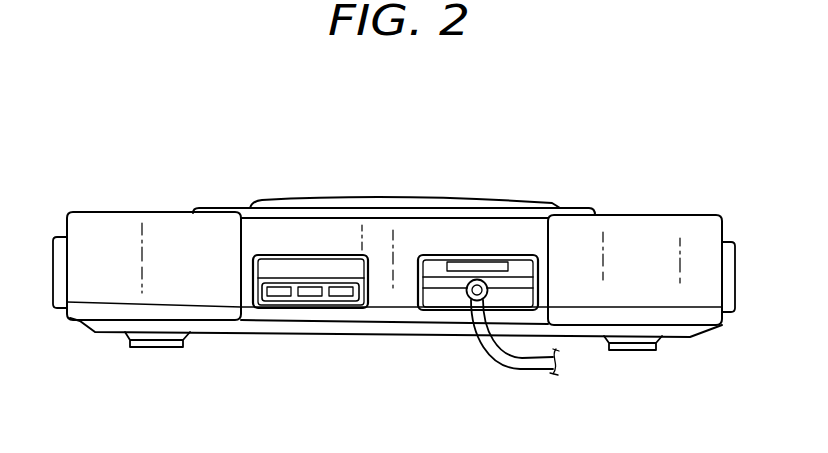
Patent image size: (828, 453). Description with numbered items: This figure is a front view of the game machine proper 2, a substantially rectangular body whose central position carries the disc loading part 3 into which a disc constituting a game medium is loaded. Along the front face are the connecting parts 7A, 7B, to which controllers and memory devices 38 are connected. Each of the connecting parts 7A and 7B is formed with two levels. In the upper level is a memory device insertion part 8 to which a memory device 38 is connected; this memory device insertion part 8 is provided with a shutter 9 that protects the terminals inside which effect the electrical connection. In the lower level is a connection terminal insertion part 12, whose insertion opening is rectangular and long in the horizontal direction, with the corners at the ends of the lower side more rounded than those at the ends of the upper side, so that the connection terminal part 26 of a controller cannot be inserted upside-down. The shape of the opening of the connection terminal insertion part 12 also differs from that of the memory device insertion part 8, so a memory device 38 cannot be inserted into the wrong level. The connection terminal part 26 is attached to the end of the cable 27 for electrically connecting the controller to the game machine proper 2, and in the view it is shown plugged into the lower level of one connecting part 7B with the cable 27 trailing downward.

The game machine proper 2 is at (566, 174).
The disc loading part 3 is at (305, 203).
The connecting part 7A is at (270, 323).
The connecting part 7B is at (407, 322).
The memory device insertion part 8 is at (268, 254).
The shutter 9 is at (335, 260).
The connection terminal insertion part 12 is at (307, 312).
The memory device 38 is at (427, 255).
The connection terminal part 26 is at (448, 310).
The cable 27 is at (538, 374).